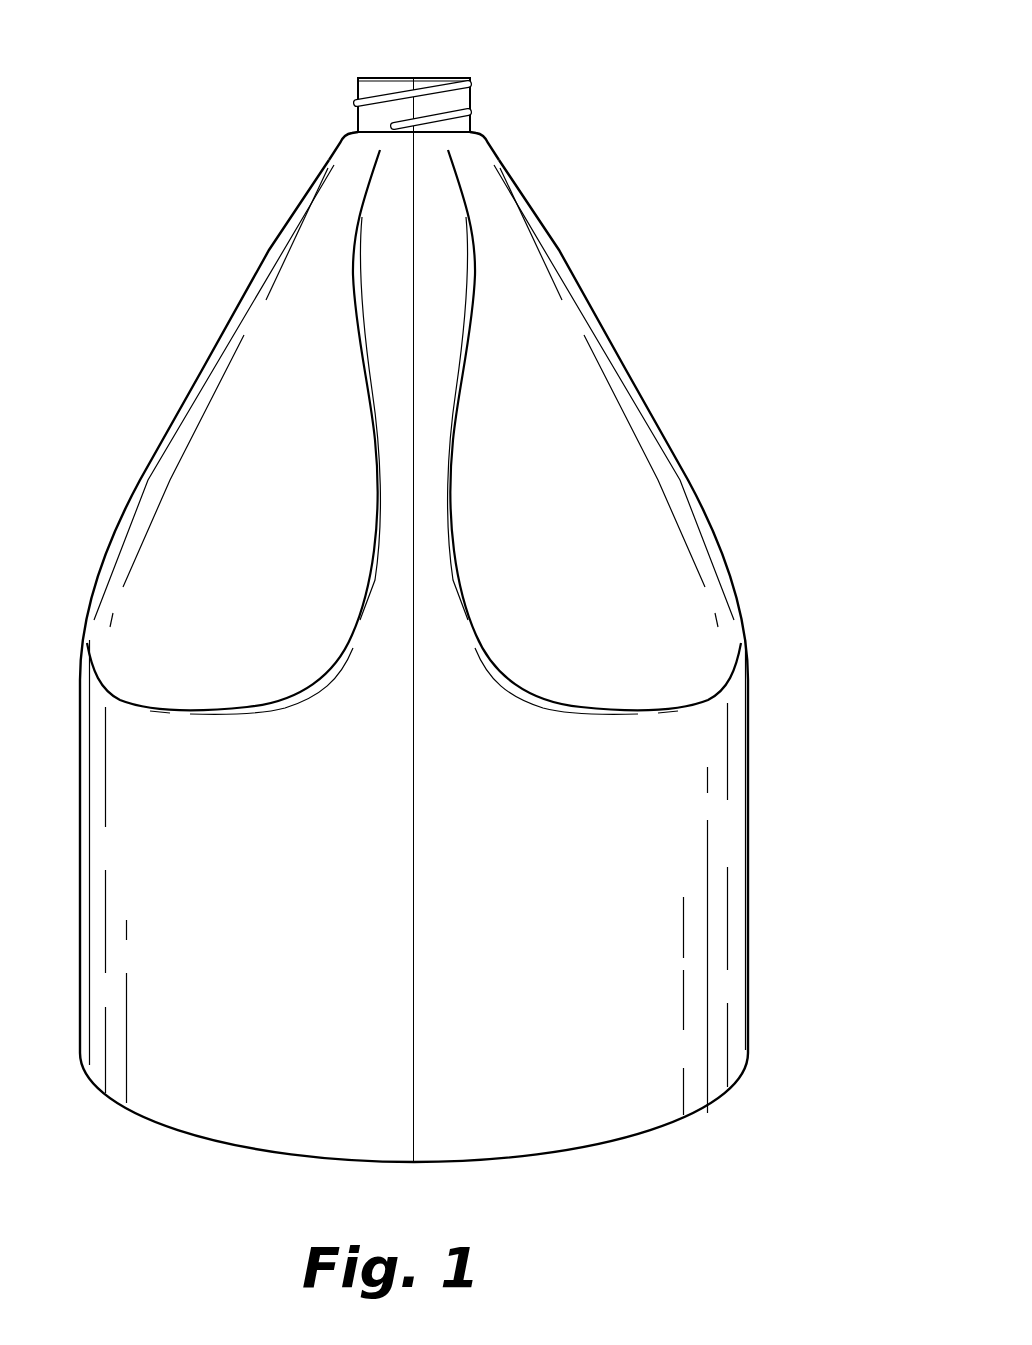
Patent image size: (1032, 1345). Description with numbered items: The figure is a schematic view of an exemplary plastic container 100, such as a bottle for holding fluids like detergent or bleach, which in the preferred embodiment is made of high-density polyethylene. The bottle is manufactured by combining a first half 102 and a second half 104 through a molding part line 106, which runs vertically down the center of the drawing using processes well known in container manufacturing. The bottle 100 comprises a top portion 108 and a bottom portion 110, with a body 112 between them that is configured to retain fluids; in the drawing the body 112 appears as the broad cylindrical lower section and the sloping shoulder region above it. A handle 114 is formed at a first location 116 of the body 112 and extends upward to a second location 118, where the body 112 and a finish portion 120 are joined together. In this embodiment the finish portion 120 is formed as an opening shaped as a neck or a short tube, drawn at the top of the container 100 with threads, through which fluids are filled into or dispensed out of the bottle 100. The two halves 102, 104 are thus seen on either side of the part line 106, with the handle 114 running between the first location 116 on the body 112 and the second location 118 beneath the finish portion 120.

The plastic container 100 is at (501, 588).
The first half 102 is at (590, 332).
The second half 104 is at (225, 353).
The molding part line 106 is at (416, 816).
The top portion 108 is at (357, 73).
The bottom portion 110 is at (770, 1040).
The body 112 is at (760, 763).
The handle 114 is at (458, 483).
The first location 116 is at (518, 612).
The second location 118 is at (322, 128).
The finish portion 120 is at (495, 93).